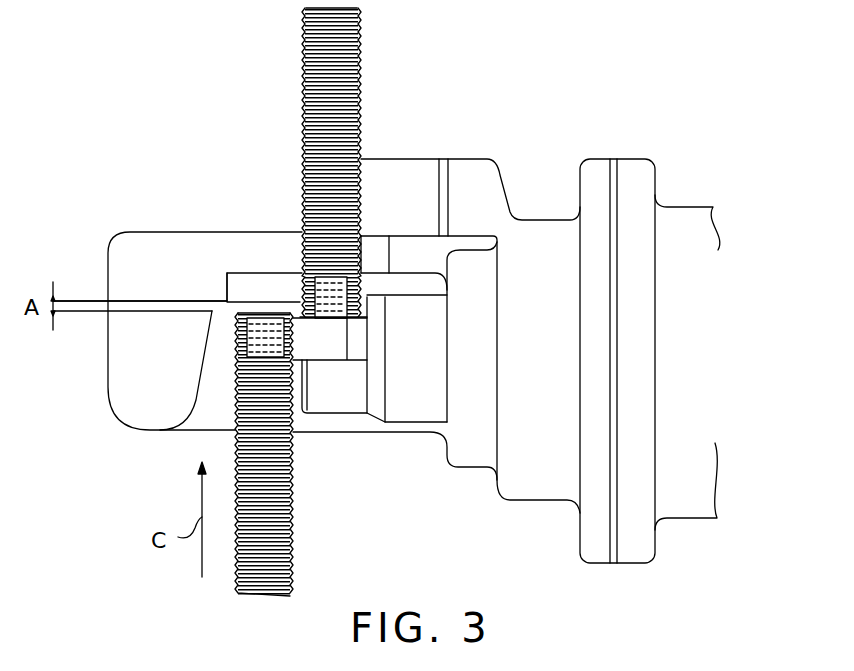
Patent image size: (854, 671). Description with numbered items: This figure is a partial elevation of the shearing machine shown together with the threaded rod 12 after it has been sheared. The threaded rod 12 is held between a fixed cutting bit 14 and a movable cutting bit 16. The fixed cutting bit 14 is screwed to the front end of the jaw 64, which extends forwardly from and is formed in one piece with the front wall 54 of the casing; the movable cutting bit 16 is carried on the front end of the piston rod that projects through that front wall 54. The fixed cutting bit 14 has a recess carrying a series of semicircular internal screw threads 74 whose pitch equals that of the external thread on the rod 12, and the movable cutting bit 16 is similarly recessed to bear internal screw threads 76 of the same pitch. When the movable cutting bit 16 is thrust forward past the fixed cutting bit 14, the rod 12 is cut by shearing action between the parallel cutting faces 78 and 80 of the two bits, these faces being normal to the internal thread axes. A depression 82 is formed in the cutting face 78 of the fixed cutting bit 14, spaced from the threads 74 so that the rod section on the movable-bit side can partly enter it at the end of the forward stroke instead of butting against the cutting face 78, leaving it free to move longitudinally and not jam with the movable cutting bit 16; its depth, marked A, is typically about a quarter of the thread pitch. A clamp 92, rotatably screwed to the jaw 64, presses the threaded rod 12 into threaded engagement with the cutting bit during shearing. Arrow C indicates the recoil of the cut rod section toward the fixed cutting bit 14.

The threaded rod 12 is at (361, 43).
The fixed cutting bit 14 is at (269, 276).
The movable cutting bit 16 is at (338, 360).
The front wall 54 is at (478, 458).
The jaw 64 is at (123, 387).
The internal screw threads 74 is at (316, 280).
The internal screw threads 76 is at (284, 365).
The cutting face 78 is at (365, 238).
The cutting face 80 is at (283, 315).
The depression 82 is at (227, 303).
The clamp 92 is at (417, 170).